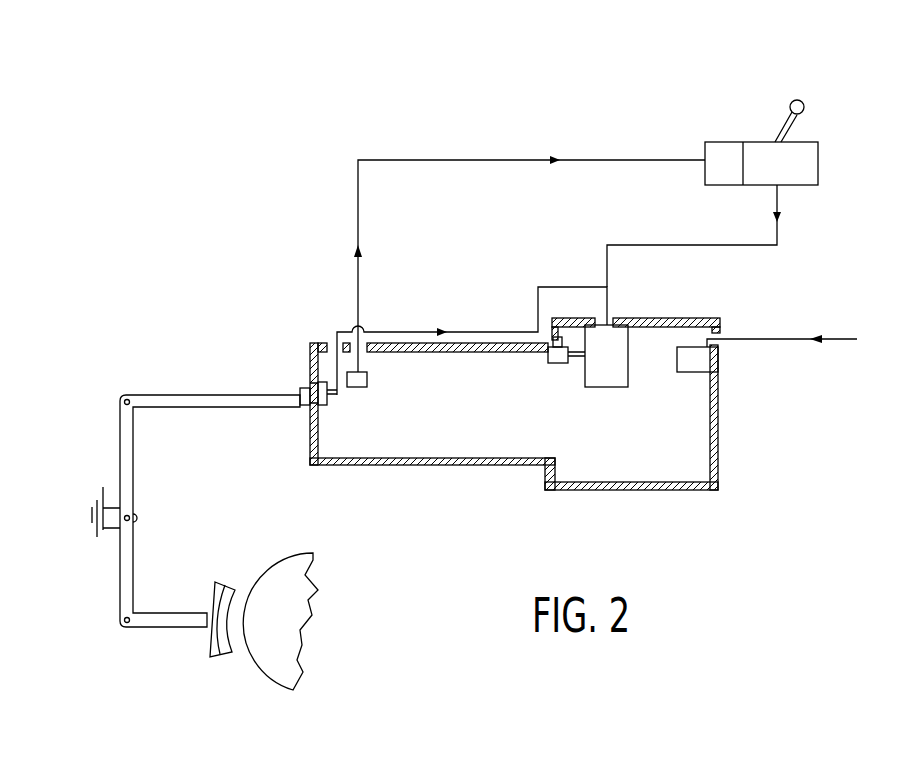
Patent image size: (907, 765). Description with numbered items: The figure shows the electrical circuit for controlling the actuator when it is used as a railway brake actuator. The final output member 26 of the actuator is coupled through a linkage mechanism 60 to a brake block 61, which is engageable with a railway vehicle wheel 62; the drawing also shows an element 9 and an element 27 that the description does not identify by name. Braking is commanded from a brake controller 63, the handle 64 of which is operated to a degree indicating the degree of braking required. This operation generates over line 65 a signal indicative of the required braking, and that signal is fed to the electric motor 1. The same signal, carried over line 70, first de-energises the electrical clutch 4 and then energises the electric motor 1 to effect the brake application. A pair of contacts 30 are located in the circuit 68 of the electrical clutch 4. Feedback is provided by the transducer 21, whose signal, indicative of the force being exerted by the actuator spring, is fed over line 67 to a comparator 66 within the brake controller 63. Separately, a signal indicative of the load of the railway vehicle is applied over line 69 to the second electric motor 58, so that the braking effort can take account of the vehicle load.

The electric motor 1 is at (606, 356).
The electrical clutch 4 is at (562, 364).
The housing 9 is at (503, 470).
The transducer 21 is at (366, 379).
The final output member 26 is at (296, 413).
The seal 27 is at (310, 384).
The pair of contacts 30 is at (323, 398).
The second electric motor 58 is at (697, 375).
The linkage mechanism 60 is at (114, 539).
The brake block 61 is at (215, 637).
The railway vehicle wheel 62 is at (300, 572).
The brake controller 63 is at (765, 124).
The handle 64 is at (796, 124).
The line 65 is at (702, 246).
The comparator 66 is at (727, 150).
The line 67 is at (513, 160).
The circuit 68 is at (470, 332).
The line 69 is at (744, 341).
The line 70 is at (578, 287).